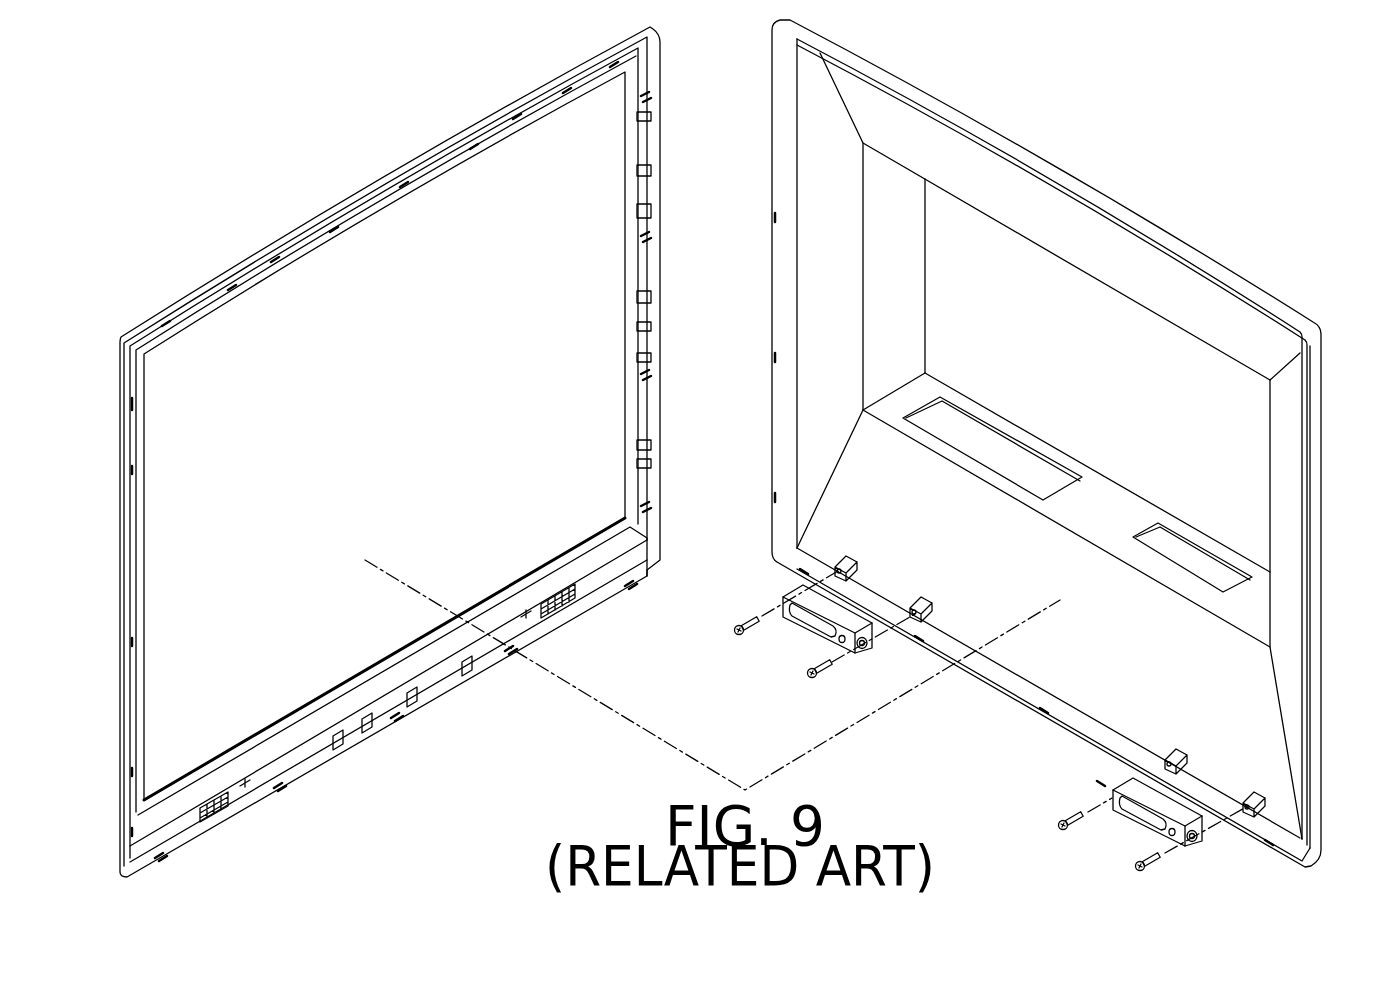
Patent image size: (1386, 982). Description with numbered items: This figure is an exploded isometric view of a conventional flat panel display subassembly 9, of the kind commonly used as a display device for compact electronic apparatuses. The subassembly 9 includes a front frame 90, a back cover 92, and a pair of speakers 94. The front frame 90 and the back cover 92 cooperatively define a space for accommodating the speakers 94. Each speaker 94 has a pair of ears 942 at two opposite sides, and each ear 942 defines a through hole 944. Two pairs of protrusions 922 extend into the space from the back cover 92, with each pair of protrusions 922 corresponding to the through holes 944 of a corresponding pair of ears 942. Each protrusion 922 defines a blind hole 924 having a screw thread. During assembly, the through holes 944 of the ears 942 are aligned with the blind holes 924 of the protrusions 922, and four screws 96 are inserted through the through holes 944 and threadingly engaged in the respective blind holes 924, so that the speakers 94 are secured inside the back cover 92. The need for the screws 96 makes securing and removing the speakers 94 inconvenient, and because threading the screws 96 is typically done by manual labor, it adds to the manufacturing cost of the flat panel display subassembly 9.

The flat panel display subassembly 9 is at (437, 94).
The front frame 90 is at (228, 285).
The back cover 92 is at (1158, 233).
The speaker 94 is at (813, 624).
The ear 942 is at (1200, 836).
The through hole 944 is at (1186, 843).
The screw 96 is at (1073, 811).
The protrusion 922 is at (1264, 792).
The blind hole 924 is at (1255, 808).